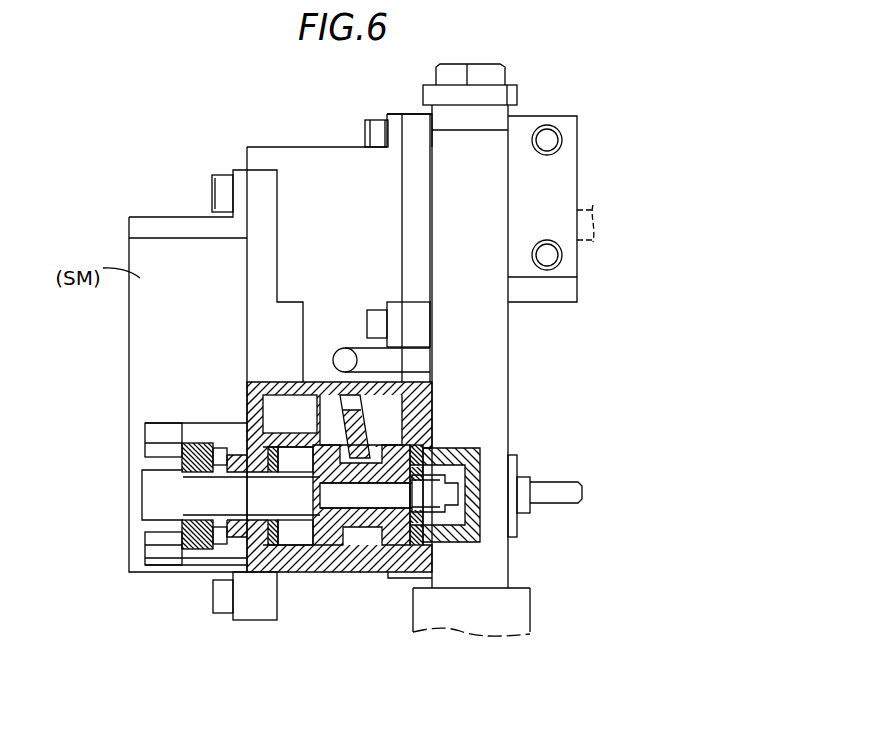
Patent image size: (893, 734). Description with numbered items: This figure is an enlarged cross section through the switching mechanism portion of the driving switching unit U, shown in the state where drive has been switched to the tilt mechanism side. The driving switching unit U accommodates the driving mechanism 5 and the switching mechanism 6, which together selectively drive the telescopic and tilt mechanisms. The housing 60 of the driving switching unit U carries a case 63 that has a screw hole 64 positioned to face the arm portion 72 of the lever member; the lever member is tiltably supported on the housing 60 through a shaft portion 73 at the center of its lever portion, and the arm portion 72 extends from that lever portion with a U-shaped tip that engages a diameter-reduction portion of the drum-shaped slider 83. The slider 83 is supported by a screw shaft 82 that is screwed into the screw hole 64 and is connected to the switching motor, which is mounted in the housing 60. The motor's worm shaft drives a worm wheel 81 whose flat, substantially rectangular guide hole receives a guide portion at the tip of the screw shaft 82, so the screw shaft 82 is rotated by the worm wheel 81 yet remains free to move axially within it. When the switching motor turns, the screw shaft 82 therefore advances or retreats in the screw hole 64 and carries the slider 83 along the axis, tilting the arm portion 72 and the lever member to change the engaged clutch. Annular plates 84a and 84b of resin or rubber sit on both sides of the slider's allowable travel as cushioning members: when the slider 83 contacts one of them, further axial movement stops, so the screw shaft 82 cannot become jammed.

The driving mechanism 5 is at (535, 110).
The switching mechanism 6 is at (341, 124).
The housing 60 is at (277, 155).
The case 63 is at (250, 400).
The screw hole 64 is at (232, 478).
The arm portion 72 is at (357, 433).
The shaft portion 73 is at (333, 360).
The worm wheel 81 is at (160, 465).
The screw shaft 82 is at (203, 507).
The slider 83 is at (376, 547).
The annular plate 84a is at (283, 548).
The annular plate 84b is at (416, 548).
The driving switching unit U is at (523, 328).